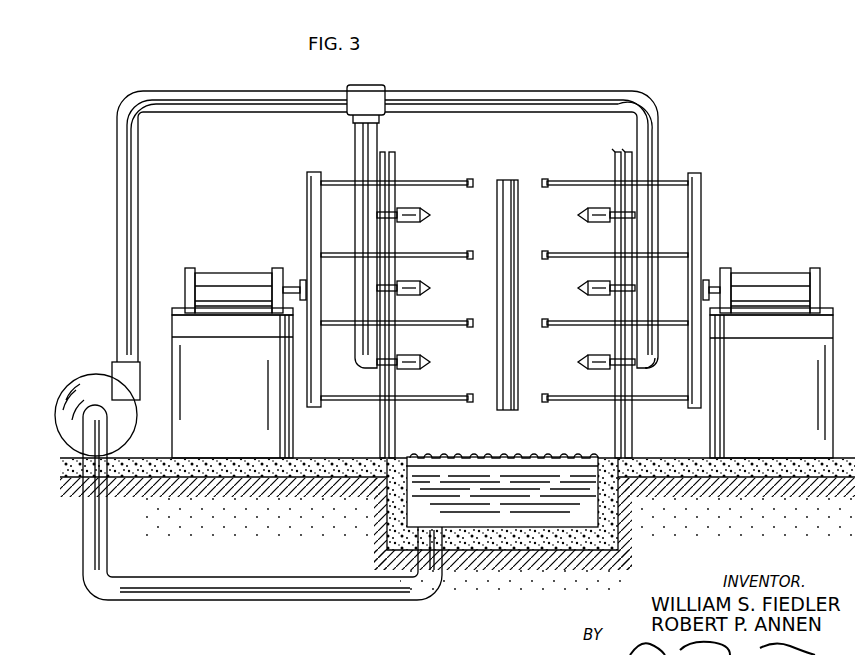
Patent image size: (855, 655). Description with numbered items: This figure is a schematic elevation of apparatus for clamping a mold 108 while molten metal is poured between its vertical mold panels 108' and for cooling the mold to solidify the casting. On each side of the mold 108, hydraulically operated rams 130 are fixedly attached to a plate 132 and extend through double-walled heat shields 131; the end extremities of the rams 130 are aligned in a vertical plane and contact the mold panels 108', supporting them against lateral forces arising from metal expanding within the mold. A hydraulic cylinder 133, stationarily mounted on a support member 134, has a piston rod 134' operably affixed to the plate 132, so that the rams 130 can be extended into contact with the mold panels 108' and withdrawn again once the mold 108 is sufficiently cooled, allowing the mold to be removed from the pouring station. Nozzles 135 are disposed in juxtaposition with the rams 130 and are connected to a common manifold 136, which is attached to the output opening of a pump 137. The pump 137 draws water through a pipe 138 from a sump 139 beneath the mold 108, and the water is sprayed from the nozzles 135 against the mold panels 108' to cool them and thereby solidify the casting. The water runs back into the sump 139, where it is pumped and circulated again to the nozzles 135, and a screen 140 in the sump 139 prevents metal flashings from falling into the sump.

The mold 108 is at (539, 266).
The mold panels 108' is at (538, 295).
The hydraulically operated rams 130 is at (415, 181).
The double-walled heat shields 131 is at (383, 151).
The plate 132 is at (307, 184).
The hydraulic cylinder 133 is at (236, 278).
The support member 134 is at (502, 383).
The piston rod 134' is at (508, 266).
The nozzles 135 is at (421, 288).
The common manifold 136 is at (647, 109).
The pump 137 is at (101, 378).
The pipe 138 is at (265, 588).
The sump 139 is at (407, 505).
The screen 140 is at (497, 452).